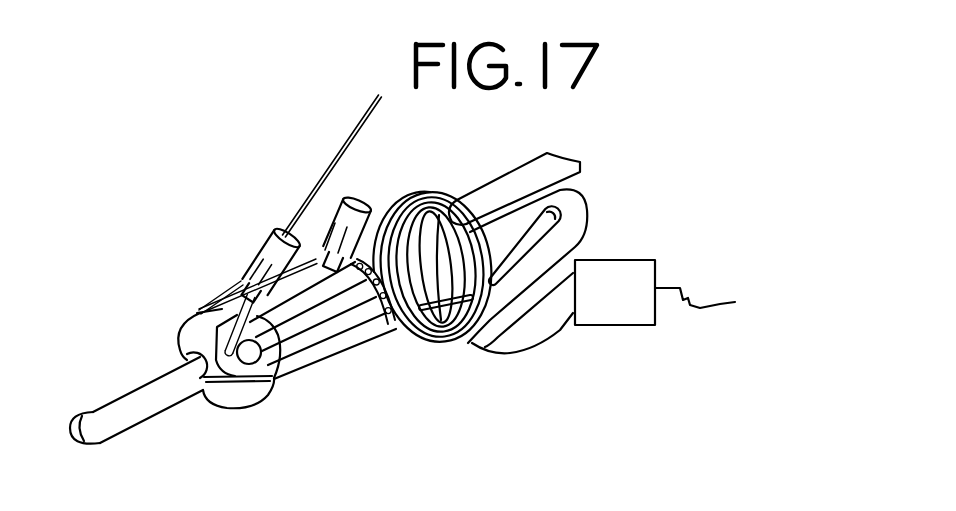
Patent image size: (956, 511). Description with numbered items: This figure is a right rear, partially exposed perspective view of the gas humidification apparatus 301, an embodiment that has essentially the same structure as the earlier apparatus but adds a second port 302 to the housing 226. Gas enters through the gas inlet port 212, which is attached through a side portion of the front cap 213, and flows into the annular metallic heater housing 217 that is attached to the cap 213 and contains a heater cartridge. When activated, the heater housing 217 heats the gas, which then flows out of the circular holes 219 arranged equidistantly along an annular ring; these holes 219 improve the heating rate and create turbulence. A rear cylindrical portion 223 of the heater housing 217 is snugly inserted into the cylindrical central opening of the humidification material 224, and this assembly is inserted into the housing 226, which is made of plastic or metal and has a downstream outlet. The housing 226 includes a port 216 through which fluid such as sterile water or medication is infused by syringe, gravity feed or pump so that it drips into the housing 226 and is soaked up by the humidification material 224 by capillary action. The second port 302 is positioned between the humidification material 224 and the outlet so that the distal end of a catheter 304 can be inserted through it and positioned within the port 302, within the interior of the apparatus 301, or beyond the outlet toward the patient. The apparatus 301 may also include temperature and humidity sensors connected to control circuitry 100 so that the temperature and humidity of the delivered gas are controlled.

The gas humidification apparatus 301 is at (212, 281).
The second port 302 is at (260, 245).
The catheter 304 is at (318, 182).
The port 216 is at (357, 199).
The front cap 213 is at (413, 190).
The gas inlet port 212 is at (452, 200).
The heater housing 217 is at (433, 340).
The circular holes 219 is at (410, 280).
The rear cylindrical portion 223 is at (278, 372).
The humidification material 224 is at (302, 342).
The housing 226 is at (337, 362).
The control circuitry 100 is at (640, 306).